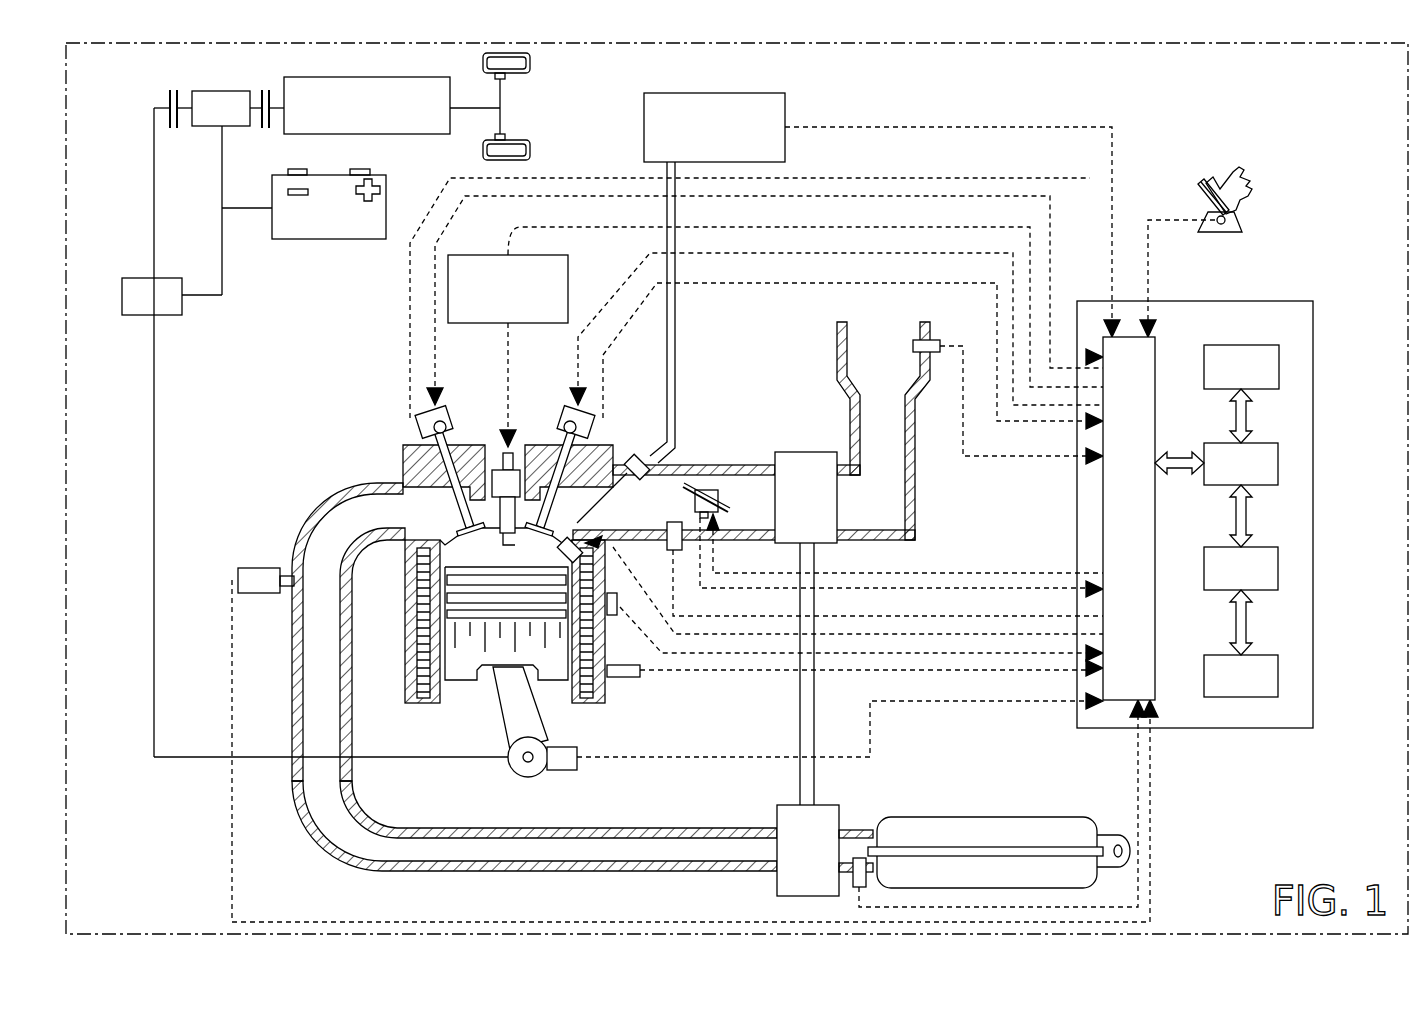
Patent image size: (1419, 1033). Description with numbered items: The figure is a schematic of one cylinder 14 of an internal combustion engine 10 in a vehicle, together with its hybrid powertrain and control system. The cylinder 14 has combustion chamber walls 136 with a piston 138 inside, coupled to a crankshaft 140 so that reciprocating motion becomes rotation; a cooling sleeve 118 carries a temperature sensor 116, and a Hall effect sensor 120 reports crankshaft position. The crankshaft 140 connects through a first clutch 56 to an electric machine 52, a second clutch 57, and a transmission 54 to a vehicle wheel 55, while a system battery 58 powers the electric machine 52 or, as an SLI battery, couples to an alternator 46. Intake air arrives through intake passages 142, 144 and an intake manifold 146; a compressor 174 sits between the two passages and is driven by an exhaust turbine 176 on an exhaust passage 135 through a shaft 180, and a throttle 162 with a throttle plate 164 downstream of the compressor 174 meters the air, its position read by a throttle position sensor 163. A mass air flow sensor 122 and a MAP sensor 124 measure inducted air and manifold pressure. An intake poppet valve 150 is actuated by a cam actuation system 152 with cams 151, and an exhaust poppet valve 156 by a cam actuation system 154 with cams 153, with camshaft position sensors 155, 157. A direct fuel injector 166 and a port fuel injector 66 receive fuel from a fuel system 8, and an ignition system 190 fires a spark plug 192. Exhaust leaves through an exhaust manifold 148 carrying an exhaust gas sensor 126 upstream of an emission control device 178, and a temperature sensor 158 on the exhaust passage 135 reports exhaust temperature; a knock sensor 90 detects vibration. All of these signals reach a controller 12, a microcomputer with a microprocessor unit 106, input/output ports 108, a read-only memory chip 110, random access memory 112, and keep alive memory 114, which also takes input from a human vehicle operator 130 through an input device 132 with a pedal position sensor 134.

The fuel system 8 is at (748, 93).
The internal combustion engine 10 is at (328, 392).
The controller 12 is at (1313, 303).
The cylinder 14 is at (503, 548).
The alternator 46 is at (122, 313).
The electric machine 52 is at (202, 91).
The transmission 54 is at (425, 134).
The vehicle wheel 55 is at (483, 63).
The first clutch 56 is at (170, 92).
The second clutch 57 is at (262, 92).
The system battery 58 is at (330, 239).
The port fuel injector 66 is at (638, 460).
The knock sensor 90 is at (628, 677).
The microprocessor unit 106 is at (1278, 460).
The input/output ports 108 is at (1158, 342).
The read-only memory chip 110 is at (1279, 362).
The random access memory 112 is at (1278, 565).
The keep alive memory 114 is at (1278, 672).
The temperature sensor 116 is at (616, 615).
The cooling sleeve 118 is at (600, 702).
The Hall effect sensor 120 is at (565, 770).
The mass air flow sensor 122 is at (935, 340).
The MAP sensor 124 is at (680, 552).
The exhaust gas sensor 126 is at (238, 572).
The human vehicle operator 130 is at (1250, 185).
The input device 132 is at (1205, 192).
The pedal position sensor 134 is at (1235, 222).
The exhaust passage 135 is at (690, 830).
The combustion chamber walls 136 is at (440, 700).
The piston 138 is at (488, 650).
The crankshaft 140 is at (520, 775).
The intake passage 142 is at (866, 372).
The intake passage 144 is at (736, 508).
The intake manifold 146 is at (646, 512).
The exhaust manifold 148 is at (358, 522).
The intake poppet valve 150 is at (514, 470).
The cam 151 is at (562, 426).
The cam actuation system 152 is at (533, 410).
The cam 153 is at (452, 436).
The cam actuation system 154 is at (450, 410).
The camshaft position sensor 155 is at (594, 433).
The exhaust poppet valve 156 is at (466, 520).
The camshaft position sensor 157 is at (424, 432).
The temperature sensor 158 is at (853, 885).
The throttle 162 is at (722, 500).
The throttle position sensor 163 is at (717, 535).
The throttle plate 164 is at (686, 487).
The direct fuel injector 166 is at (578, 545).
The compressor 174 is at (790, 509).
The exhaust turbine 176 is at (792, 864).
The emission control device 178 is at (970, 817).
The shaft 180 is at (818, 778).
The ignition system 190 is at (462, 255).
The spark plug 192 is at (503, 485).